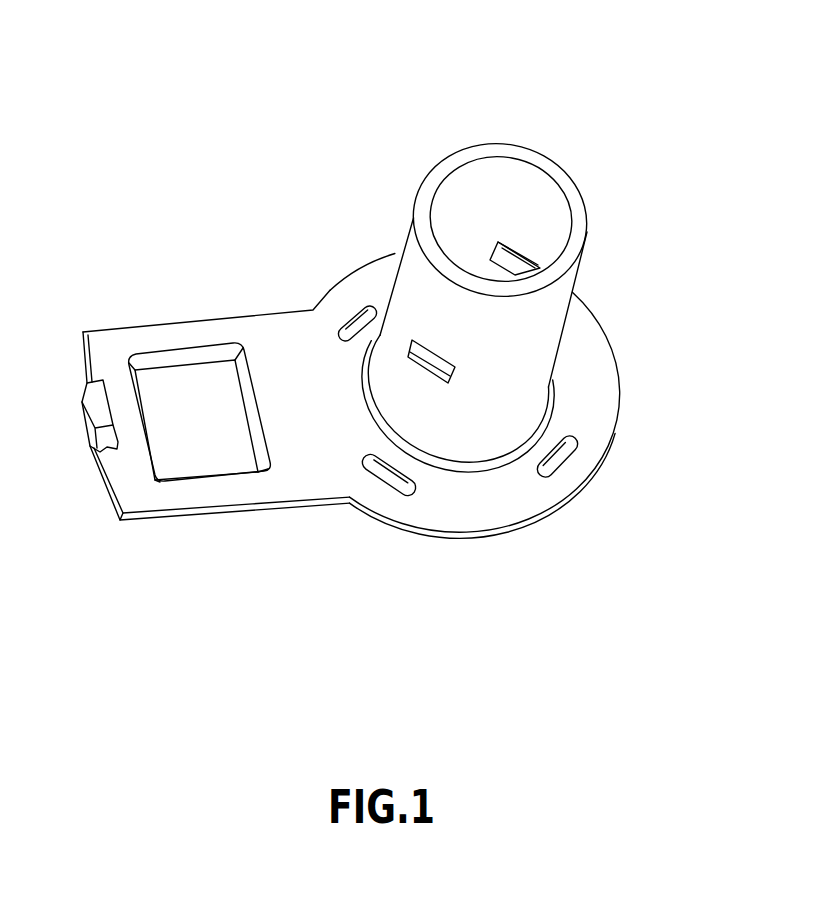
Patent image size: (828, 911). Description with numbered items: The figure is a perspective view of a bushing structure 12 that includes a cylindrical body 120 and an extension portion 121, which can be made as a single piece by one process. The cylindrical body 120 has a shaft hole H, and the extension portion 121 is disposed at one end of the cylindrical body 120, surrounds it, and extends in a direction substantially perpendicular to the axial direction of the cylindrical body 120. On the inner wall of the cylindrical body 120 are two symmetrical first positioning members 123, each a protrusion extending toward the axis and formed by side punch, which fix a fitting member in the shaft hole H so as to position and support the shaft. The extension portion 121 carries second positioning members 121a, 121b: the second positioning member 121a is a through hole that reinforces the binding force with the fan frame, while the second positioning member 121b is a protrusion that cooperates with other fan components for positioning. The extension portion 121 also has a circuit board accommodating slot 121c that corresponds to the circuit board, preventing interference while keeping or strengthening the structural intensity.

The bushing structure 12 is at (186, 52).
The cylindrical body 120 is at (543, 328).
The extension portion 121 is at (596, 404).
The second positioning member 121a is at (563, 460).
The second positioning member 121b is at (92, 425).
The circuit board accommodating slot 121c is at (192, 378).
The first positioning member 123 is at (428, 352).
The shaft hole H is at (491, 188).